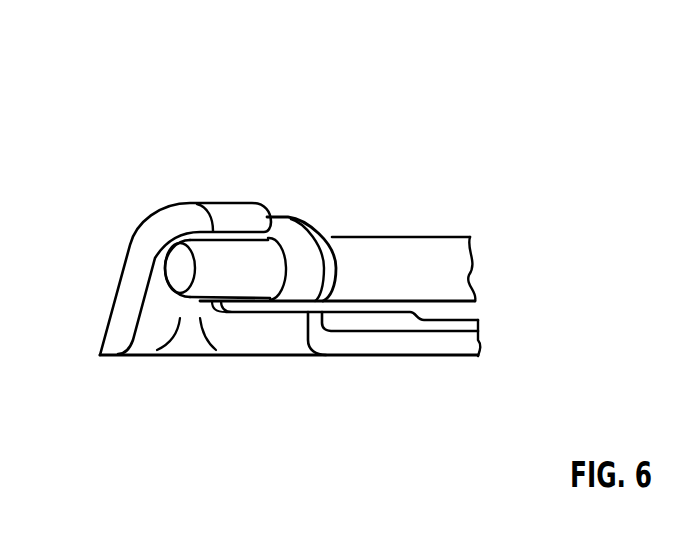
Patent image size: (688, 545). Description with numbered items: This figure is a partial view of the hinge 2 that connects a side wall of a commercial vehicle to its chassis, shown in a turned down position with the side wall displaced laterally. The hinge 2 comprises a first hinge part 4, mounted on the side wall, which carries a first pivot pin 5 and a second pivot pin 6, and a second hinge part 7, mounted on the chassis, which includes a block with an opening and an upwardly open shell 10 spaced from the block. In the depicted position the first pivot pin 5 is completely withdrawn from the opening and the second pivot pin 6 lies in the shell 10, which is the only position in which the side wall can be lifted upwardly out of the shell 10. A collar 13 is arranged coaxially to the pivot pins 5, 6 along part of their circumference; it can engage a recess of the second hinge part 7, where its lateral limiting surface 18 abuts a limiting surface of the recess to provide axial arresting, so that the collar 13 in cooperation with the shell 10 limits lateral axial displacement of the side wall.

The hinge 2 is at (96, 376).
The first hinge part 4 is at (456, 226).
The first pivot pin 5 is at (397, 267).
The second pivot pin 6 is at (245, 278).
The second hinge part 7 is at (417, 356).
The shell 10 is at (156, 225).
The collar 13 is at (316, 262).
The lateral limiting surface 18 is at (311, 265).